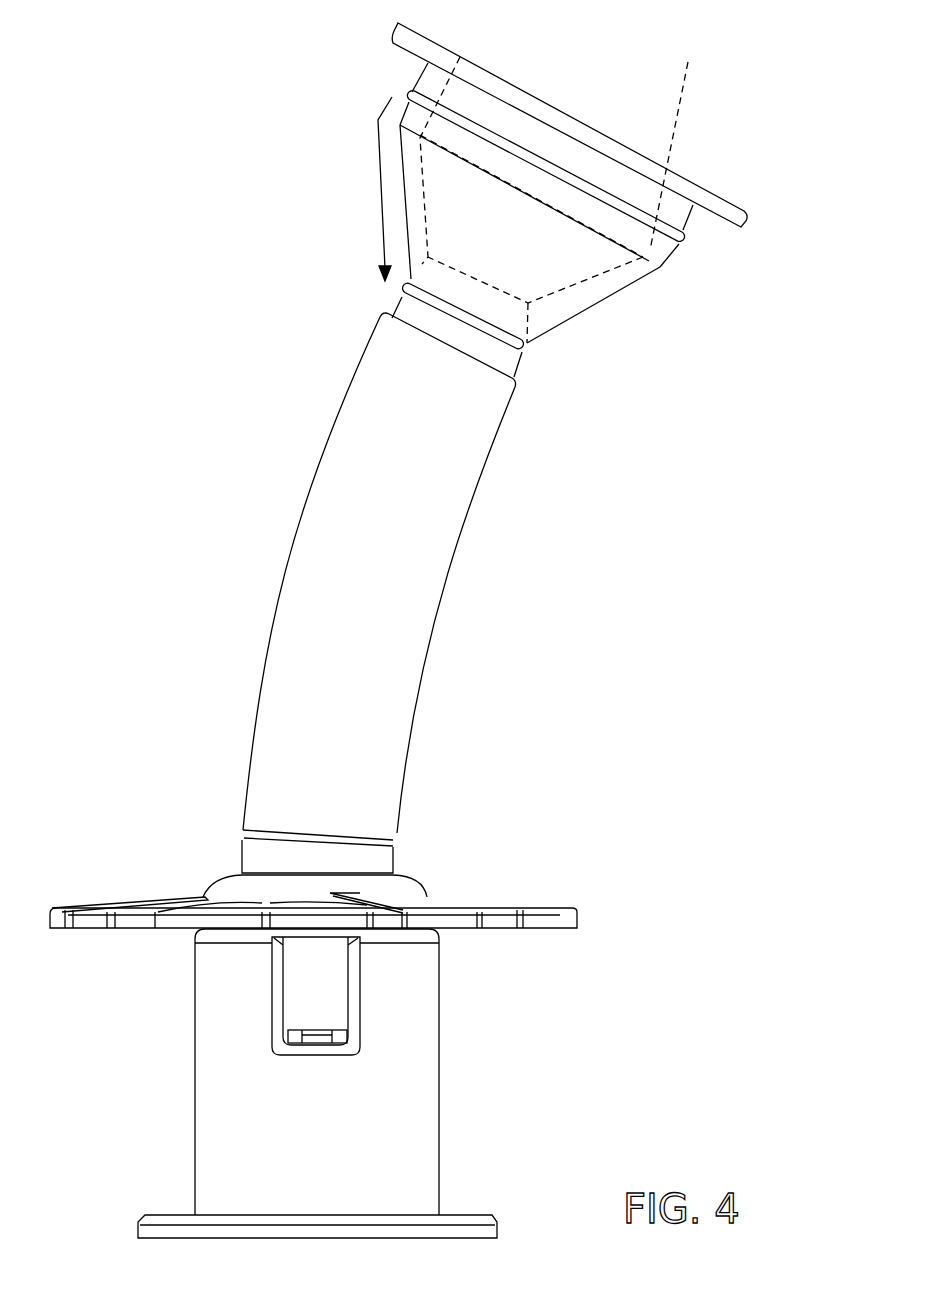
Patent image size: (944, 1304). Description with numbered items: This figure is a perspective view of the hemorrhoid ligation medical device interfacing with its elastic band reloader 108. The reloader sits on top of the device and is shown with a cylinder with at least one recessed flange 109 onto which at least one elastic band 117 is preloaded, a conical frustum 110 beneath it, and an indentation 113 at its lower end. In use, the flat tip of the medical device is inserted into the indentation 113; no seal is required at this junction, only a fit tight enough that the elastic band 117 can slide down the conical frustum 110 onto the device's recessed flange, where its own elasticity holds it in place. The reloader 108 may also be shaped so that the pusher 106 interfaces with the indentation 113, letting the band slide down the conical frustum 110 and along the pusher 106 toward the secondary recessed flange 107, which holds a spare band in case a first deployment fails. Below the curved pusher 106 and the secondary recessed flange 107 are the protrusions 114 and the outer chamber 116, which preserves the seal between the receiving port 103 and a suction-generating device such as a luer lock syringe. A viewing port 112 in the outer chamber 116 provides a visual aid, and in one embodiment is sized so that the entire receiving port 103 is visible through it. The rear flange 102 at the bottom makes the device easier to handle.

The rear flange 102 is at (495, 1215).
The receiving port 103 is at (283, 998).
The pusher 106 is at (432, 628).
The secondary recessed flange 107 is at (243, 833).
The elastic band reloader 108 is at (652, 270).
The cylinder with at least one recessed flange 109 is at (687, 225).
The conical frustum 110 is at (603, 300).
The viewing port 112 is at (317, 1057).
The indentation 113 is at (422, 263).
The protrusions 114 is at (570, 910).
The outer chamber 116 is at (440, 1055).
The elastic band 117 is at (410, 92).